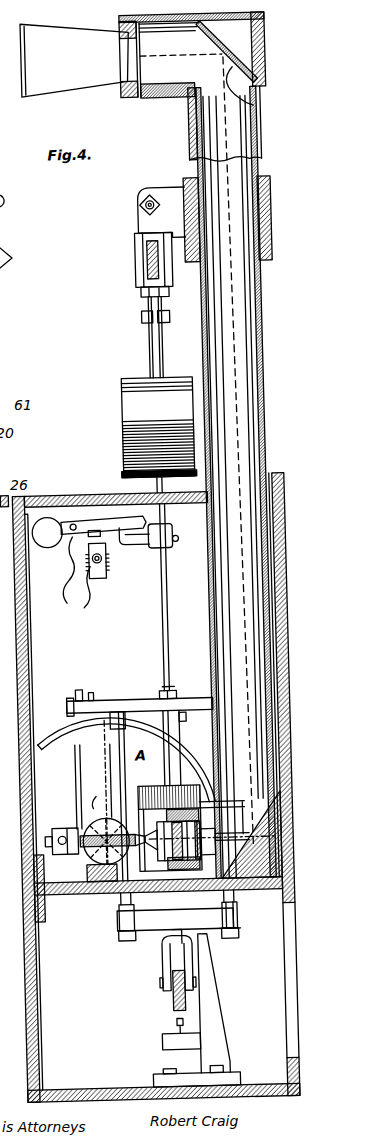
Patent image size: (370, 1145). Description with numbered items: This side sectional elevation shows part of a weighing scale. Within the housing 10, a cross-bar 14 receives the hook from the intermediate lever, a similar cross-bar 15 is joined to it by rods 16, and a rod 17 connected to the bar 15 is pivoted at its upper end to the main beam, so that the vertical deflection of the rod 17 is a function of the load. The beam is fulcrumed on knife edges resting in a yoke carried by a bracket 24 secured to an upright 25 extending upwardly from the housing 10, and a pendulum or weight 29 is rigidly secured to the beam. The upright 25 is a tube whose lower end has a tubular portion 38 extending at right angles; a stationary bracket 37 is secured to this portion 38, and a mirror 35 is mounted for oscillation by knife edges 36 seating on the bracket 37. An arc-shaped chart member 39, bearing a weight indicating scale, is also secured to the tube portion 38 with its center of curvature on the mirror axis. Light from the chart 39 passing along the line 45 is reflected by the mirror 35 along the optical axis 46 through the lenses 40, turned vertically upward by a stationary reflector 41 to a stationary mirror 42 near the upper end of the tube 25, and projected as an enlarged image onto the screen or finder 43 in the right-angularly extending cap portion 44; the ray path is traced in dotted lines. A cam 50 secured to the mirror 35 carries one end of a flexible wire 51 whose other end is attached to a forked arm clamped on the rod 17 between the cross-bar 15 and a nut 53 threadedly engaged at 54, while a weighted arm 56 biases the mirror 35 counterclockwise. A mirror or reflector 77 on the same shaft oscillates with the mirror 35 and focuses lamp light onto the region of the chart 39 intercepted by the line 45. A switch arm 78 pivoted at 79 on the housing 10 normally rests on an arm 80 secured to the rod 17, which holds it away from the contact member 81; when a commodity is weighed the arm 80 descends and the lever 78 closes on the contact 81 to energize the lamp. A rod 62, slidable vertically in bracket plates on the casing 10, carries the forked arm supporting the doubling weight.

The housing 10 is at (286, 703).
The cross-bar 14 is at (138, 927).
The cross-bar 15 is at (197, 697).
The rods 16 is at (112, 767).
The rod 17 is at (157, 620).
The bracket 24 is at (146, 195).
The upright 25 is at (268, 330).
The pendulum or weight 29 is at (131, 411).
The mirror 35 is at (101, 818).
The knife edges 36 is at (42, 854).
The stationary bracket 37 is at (134, 795).
The tubular portion 38 is at (178, 911).
The arc-shaped chart member 39 is at (194, 789).
The system of lenses 40 is at (108, 903).
The stationary reflector 41 is at (241, 828).
The stationary mirror 42 is at (265, 107).
The screen or finder 43 is at (207, 32).
The cap portion 44 is at (218, 51).
The line 45 is at (97, 750).
The optical axis 46 is at (221, 898).
The cam 50 is at (72, 854).
The flexible wire 51 is at (78, 807).
The nut 53 is at (173, 688).
The screw-threaded engagement 54 is at (159, 686).
The weighted arm 56 is at (58, 836).
The rod 62 is at (147, 693).
The mirror or reflector 77 is at (101, 794).
The switch arm 78 is at (94, 517).
The pivot 79 is at (74, 522).
The arm 80 is at (143, 544).
The contact member 81 is at (71, 580).